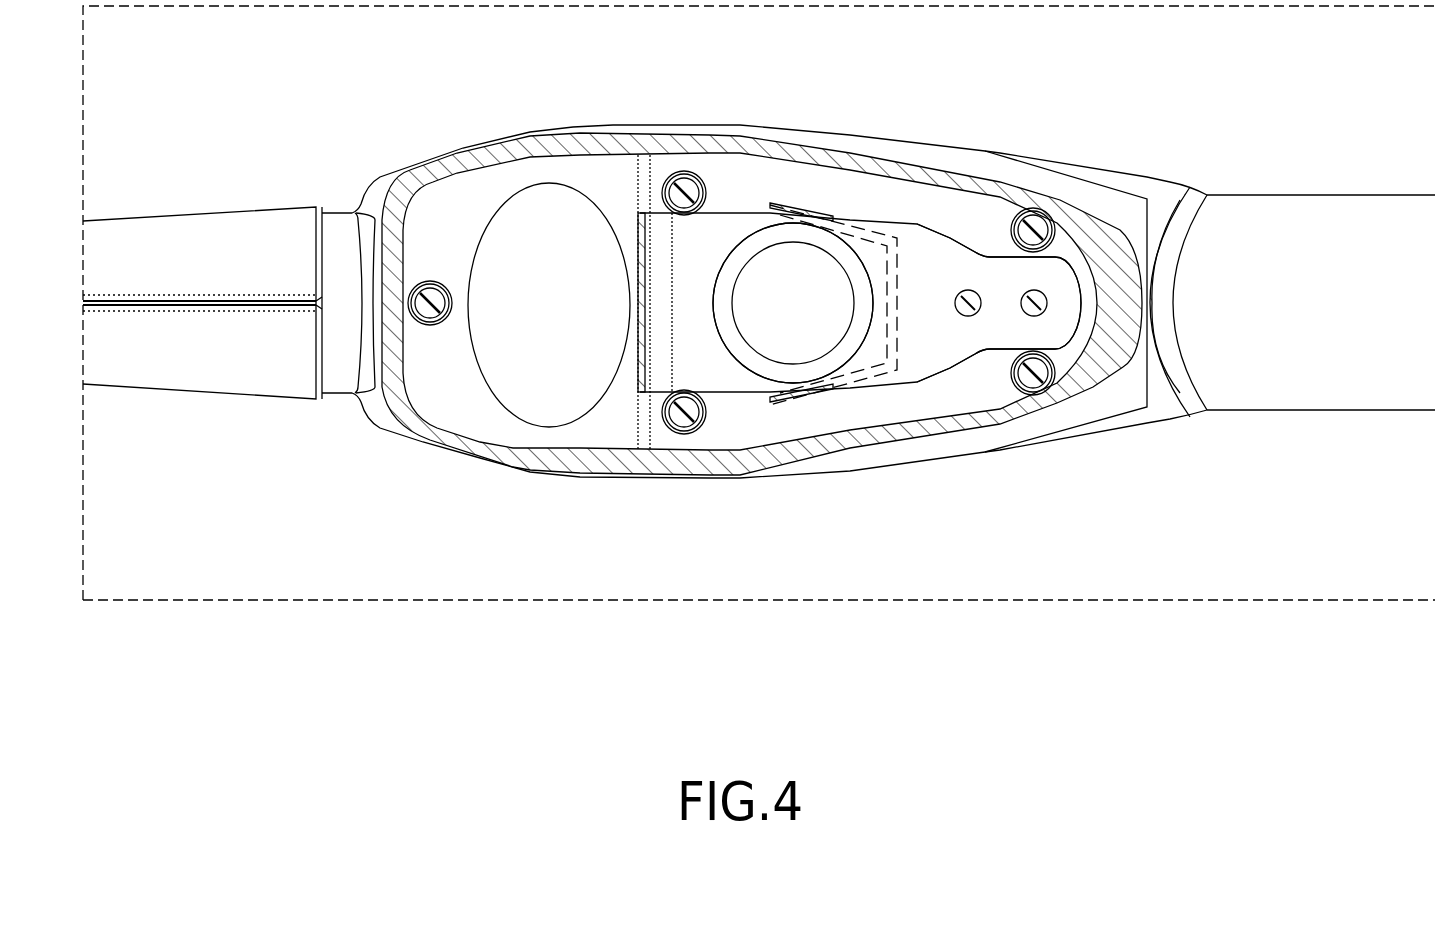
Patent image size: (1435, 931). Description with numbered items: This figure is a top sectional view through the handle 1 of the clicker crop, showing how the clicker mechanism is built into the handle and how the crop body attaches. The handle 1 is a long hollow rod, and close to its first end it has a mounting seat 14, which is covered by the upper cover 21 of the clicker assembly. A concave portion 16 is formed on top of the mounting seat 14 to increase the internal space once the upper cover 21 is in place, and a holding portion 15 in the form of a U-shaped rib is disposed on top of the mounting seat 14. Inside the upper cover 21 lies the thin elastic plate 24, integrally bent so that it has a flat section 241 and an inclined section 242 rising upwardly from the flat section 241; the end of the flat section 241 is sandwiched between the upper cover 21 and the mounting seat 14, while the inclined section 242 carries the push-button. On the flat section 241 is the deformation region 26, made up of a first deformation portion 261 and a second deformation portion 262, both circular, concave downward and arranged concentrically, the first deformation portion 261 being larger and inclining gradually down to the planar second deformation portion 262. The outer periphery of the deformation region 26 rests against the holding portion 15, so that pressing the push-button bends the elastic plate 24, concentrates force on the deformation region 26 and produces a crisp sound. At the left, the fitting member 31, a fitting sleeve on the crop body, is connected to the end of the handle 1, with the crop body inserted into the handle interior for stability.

The handle 1 is at (1331, 196).
The mounting seat 14 is at (735, 190).
The holding portion 15 is at (863, 227).
The concave portion 16 is at (522, 247).
The upper cover 21 is at (773, 138).
The elastic plate 24 is at (860, 392).
The flat section 241 is at (922, 350).
The inclined section 242 is at (654, 232).
The deformation region 26 is at (718, 388).
The first deformation portion 261 is at (738, 347).
The second deformation portion 262 is at (755, 302).
The fitting member 31 is at (163, 225).